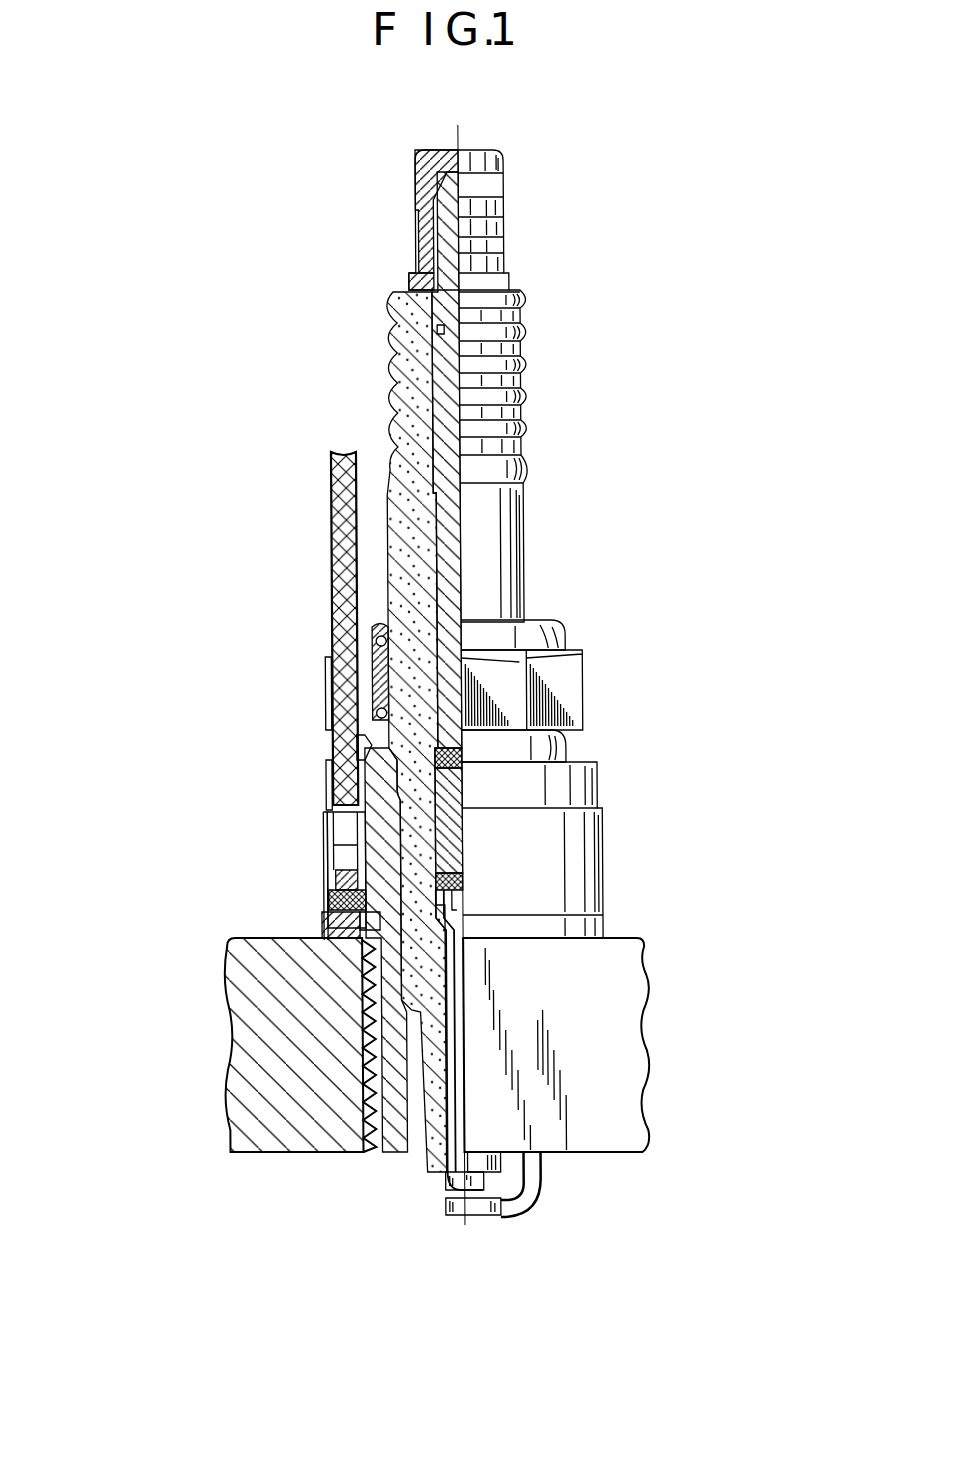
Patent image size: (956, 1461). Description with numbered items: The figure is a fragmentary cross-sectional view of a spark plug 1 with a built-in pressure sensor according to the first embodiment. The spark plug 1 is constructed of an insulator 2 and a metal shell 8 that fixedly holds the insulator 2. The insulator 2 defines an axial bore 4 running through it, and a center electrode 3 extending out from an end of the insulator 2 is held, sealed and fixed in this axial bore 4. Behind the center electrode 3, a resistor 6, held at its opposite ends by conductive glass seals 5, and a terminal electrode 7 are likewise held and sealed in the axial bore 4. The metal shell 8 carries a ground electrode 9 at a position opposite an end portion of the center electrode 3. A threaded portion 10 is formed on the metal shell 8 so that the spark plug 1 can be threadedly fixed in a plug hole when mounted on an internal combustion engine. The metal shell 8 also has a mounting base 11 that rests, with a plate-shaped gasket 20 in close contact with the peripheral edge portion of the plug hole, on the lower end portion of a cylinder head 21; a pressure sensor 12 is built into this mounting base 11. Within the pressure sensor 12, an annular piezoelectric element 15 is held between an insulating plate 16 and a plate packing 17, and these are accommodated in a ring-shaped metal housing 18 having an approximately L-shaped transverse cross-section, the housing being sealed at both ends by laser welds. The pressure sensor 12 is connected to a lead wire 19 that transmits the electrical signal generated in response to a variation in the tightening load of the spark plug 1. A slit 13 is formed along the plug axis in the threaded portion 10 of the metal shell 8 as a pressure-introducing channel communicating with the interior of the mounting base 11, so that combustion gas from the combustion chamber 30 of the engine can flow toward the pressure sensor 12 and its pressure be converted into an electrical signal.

The spark plug 1 is at (524, 217).
The insulator 2 is at (389, 378).
The center electrode 3 is at (513, 1205).
The axial bore 4 is at (399, 316).
The conductive glass seals 5 is at (464, 750).
The resistor 6 is at (458, 845).
The terminal electrode 7 is at (417, 257).
The metal shell 8 is at (565, 642).
The ground electrode 9 is at (451, 1217).
The threaded portion 10 is at (355, 1145).
The mounting base 11 is at (566, 872).
The pressure sensor 12 is at (315, 840).
The slit 13 is at (382, 1152).
The annular piezoelectric element 15 is at (316, 880).
The insulating plate 16 is at (316, 855).
The plate packing 17 is at (316, 895).
The metal housing 18 is at (316, 905).
The lead wire 19 is at (328, 566).
The plate-shaped gasket 20 is at (316, 922).
The cylinder head 21 is at (222, 1045).
The combustion chamber 30 is at (500, 1281).